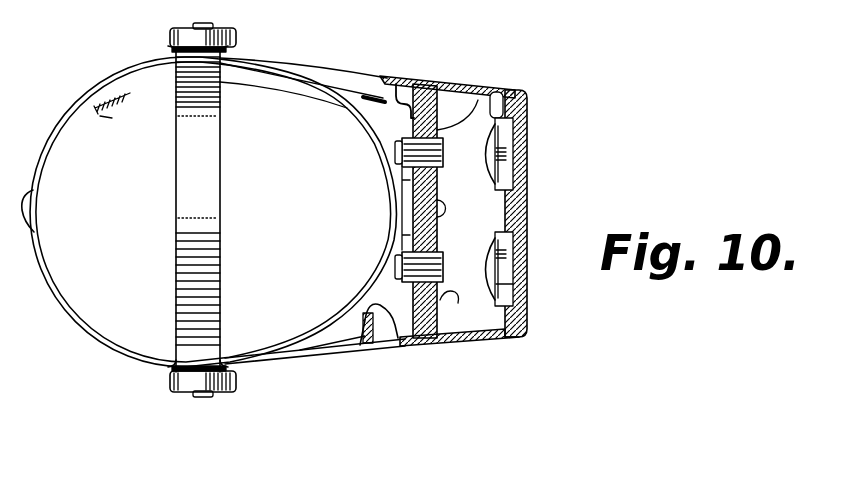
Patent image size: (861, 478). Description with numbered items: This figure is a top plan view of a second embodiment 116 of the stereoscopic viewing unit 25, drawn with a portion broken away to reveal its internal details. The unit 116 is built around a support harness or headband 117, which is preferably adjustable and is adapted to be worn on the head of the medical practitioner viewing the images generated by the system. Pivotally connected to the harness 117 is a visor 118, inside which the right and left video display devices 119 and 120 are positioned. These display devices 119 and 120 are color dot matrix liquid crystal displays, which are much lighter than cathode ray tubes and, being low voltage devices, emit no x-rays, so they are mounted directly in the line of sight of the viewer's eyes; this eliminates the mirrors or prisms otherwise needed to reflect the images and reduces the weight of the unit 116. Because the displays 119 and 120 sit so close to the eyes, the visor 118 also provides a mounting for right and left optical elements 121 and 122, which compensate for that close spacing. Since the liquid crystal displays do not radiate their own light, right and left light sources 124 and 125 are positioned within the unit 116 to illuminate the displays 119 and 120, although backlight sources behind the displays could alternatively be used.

The stereoscopic viewing unit 25 is at (307, 36).
The second embodiment of the stereoscopic viewing unit 116 is at (269, 48).
The support harness or headband 117 is at (112, 72).
The visor 118 is at (527, 165).
The right video display device 119 is at (497, 90).
The left video display device 120 is at (517, 287).
The right optical element 121 is at (404, 150).
The left optical element 122 is at (404, 262).
The right light source 124 is at (443, 128).
The left light source 125 is at (450, 300).